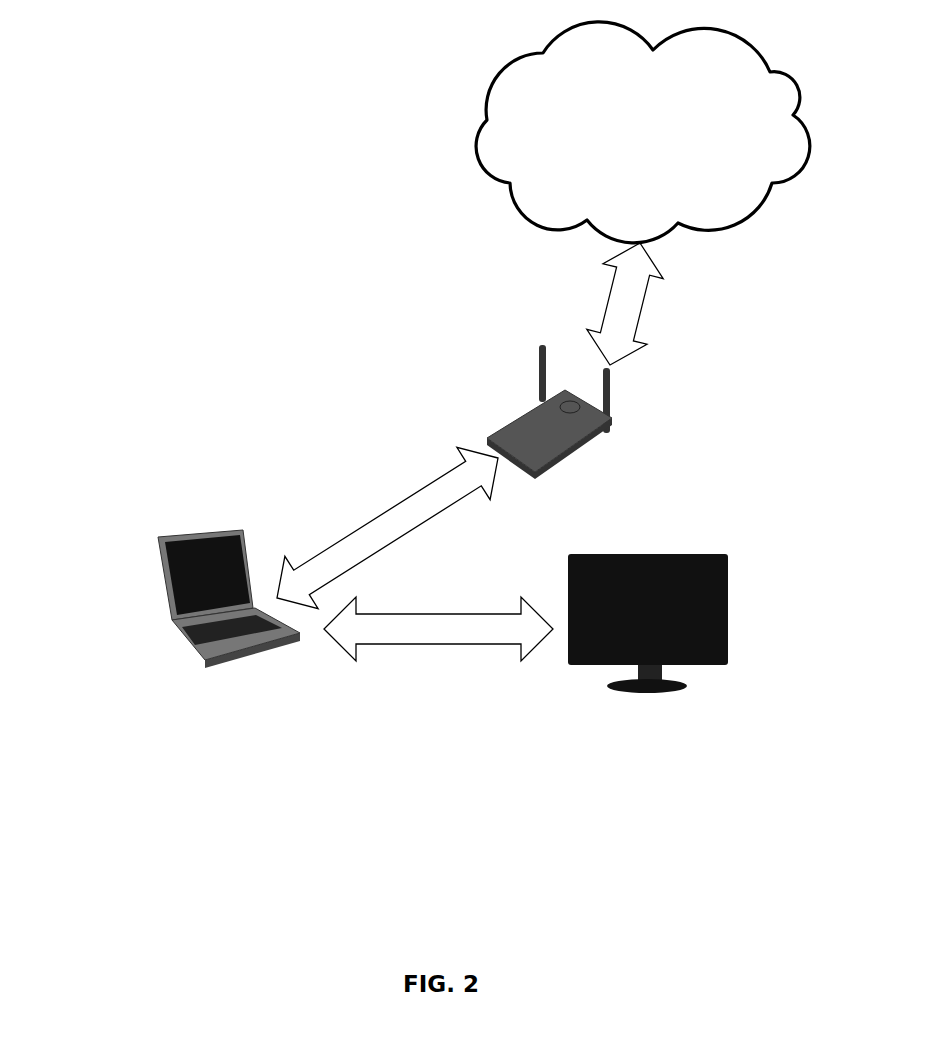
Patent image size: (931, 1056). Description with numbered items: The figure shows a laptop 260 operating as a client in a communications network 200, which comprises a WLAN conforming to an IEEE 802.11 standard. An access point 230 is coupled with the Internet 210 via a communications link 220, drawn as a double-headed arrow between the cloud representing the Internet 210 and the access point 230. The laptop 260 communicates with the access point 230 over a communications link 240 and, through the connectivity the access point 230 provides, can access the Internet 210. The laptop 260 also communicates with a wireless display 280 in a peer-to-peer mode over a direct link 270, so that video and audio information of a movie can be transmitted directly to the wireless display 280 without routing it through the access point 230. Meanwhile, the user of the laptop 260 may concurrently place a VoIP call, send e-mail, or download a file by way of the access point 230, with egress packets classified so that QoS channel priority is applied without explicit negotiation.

The communications network 200 is at (130, 145).
The Internet 210 is at (515, 88).
The communications link 220 is at (608, 318).
The access point 230 is at (530, 428).
The communications link 240 is at (420, 505).
The laptop 260 is at (170, 625).
The direct link 270 is at (437, 612).
The wireless display 280 is at (647, 690).